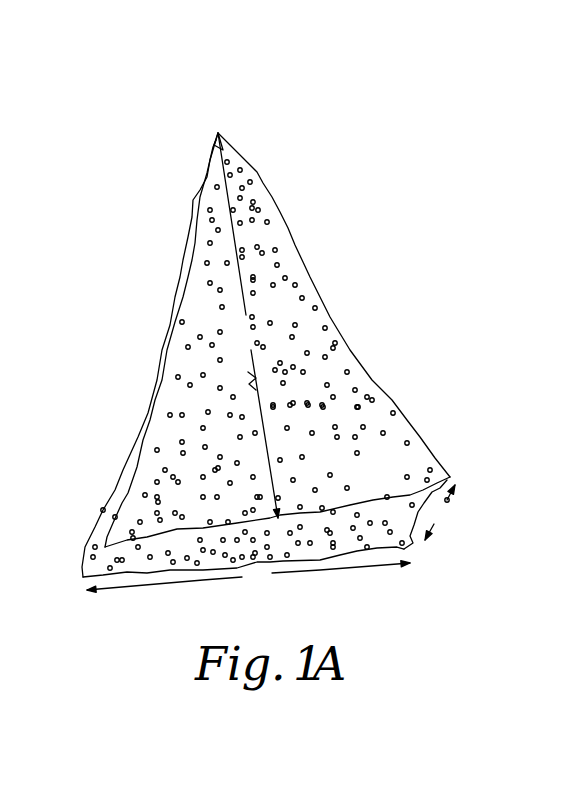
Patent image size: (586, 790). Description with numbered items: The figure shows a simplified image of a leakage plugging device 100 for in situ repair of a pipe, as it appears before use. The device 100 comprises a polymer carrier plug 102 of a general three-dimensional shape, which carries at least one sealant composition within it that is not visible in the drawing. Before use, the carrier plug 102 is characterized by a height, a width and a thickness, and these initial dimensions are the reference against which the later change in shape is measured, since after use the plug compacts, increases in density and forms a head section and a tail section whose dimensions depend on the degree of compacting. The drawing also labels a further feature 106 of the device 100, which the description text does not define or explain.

The leakage plugging device 100 is at (418, 127).
The polymer carrier plug 102 is at (310, 277).
The particulate inclusions 106 is at (307, 351).